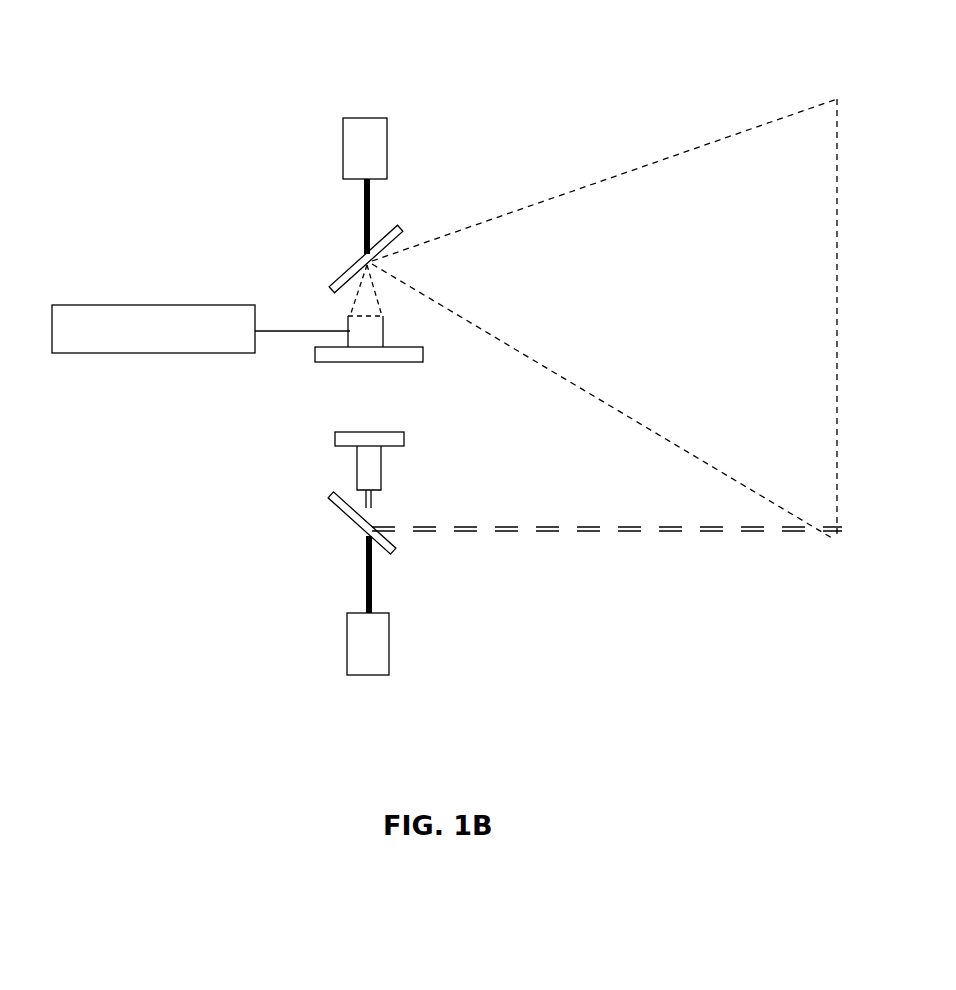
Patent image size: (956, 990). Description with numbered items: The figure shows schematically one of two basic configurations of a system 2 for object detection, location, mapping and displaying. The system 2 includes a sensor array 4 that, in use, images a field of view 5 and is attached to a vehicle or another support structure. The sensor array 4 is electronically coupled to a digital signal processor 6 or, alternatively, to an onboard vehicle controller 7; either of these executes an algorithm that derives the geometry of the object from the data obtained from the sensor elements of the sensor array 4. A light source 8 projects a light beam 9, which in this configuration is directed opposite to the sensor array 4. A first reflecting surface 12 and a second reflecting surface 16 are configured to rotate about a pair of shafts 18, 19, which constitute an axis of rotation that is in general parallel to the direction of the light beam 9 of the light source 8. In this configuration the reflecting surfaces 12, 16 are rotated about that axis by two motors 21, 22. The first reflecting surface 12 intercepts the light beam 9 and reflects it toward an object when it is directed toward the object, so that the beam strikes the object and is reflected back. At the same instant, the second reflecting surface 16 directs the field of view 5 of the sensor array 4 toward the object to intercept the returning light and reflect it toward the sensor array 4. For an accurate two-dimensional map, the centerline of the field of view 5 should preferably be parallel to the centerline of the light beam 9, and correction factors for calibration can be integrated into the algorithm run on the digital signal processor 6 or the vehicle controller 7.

The system 2 is at (418, 68).
The sensor array 4 is at (363, 325).
The field of view 5 is at (651, 216).
The digital signal processor 6 is at (337, 355).
The onboard vehicle controller 7 is at (115, 340).
The light source 8 is at (370, 467).
The light beam 9 is at (675, 530).
The first reflecting surface 12 is at (405, 557).
The second reflecting surface 16 is at (352, 277).
The shaft 18 is at (367, 578).
The shaft 19 is at (357, 203).
The motor 21 is at (370, 652).
The motor 22 is at (353, 157).